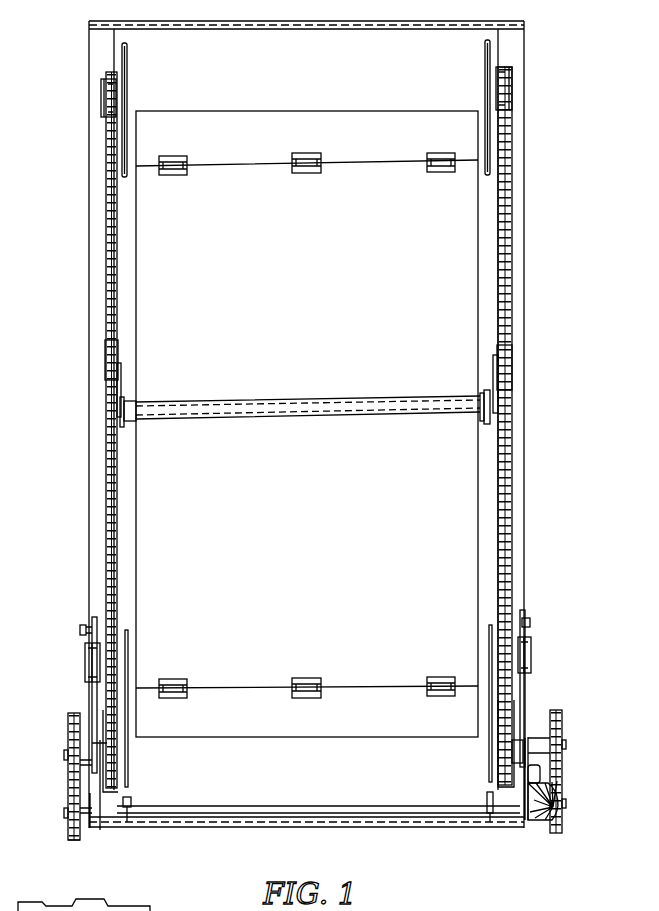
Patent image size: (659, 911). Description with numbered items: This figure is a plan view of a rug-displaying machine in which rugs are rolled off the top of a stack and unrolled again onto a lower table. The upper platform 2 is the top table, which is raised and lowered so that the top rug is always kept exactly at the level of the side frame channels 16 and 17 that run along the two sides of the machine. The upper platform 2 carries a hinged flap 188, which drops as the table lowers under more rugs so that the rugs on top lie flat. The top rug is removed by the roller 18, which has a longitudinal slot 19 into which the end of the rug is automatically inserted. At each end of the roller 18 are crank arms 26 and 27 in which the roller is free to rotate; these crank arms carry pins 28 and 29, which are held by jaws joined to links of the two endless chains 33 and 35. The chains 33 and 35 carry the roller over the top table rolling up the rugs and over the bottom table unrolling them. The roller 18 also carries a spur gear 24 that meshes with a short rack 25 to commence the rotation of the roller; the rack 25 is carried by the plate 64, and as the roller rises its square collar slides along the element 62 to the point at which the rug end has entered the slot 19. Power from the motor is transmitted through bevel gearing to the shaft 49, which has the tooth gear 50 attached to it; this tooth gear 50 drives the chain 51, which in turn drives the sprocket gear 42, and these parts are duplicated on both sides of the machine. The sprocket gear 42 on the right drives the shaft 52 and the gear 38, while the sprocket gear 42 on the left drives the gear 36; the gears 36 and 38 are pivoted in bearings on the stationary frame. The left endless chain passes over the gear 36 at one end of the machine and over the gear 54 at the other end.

The upper platform 2 is at (307, 424).
The side frame channel 16 is at (521, 528).
The side frame channel 17 is at (92, 475).
The roller 18 is at (279, 397).
The longitudinal slot 19 is at (425, 403).
The spur gear 24 is at (490, 423).
The rack 25 is at (532, 655).
The crank arm 26 is at (510, 368).
The crank arm 27 is at (104, 370).
The pin 28 is at (510, 352).
The pin 29 is at (107, 348).
The chain 33 is at (512, 473).
The chain 35 is at (117, 262).
The gear 36 is at (118, 772).
The gear 38 is at (500, 748).
The sprocket gear 42 is at (70, 718).
The shaft 49 is at (340, 803).
The tooth gear 50 is at (70, 826).
The chain 51 is at (70, 775).
The shaft 52 is at (528, 737).
The gear 54 is at (105, 97).
The element 62 is at (80, 630).
The plate 64 is at (96, 700).
The hinged flap 188 is at (409, 121).